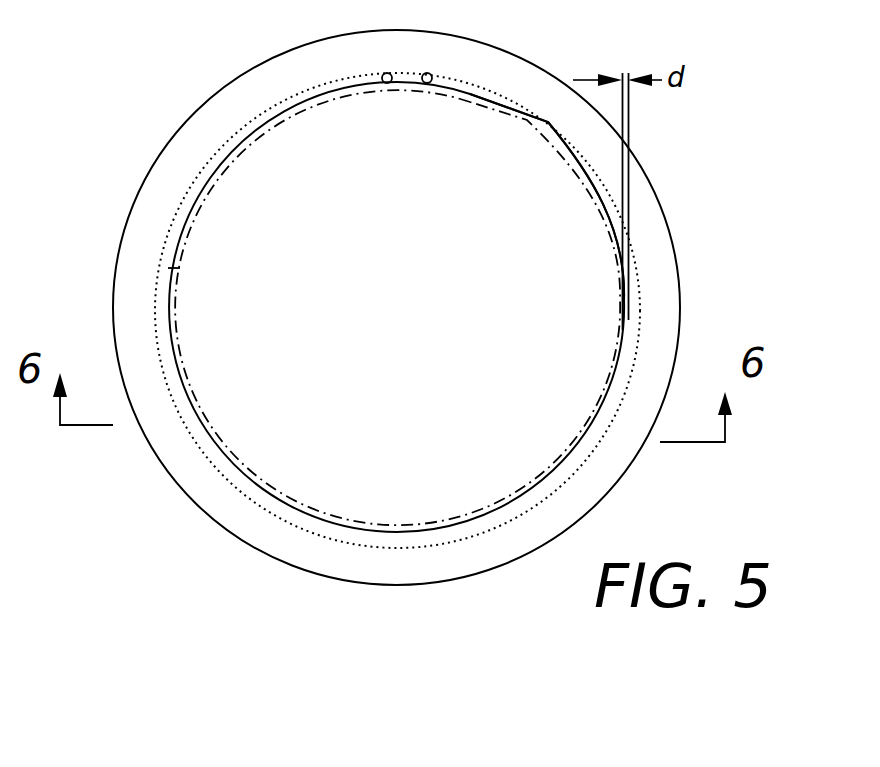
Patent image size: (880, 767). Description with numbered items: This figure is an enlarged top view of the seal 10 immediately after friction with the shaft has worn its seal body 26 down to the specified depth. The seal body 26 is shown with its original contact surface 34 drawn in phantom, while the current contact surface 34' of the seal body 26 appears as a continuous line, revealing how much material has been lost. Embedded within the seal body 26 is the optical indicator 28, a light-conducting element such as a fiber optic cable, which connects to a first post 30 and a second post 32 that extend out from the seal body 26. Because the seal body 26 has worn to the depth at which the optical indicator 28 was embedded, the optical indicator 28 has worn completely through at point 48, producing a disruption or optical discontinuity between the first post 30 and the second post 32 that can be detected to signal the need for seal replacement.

The seal 10 is at (139, 118).
The seal body 26 is at (150, 202).
The optical indicator 28 is at (285, 130).
The first post 30 is at (387, 84).
The second post 32 is at (427, 84).
The original contact surface 34 is at (397, 307).
The current contact surface 34' is at (218, 300).
The point 48 is at (551, 108).